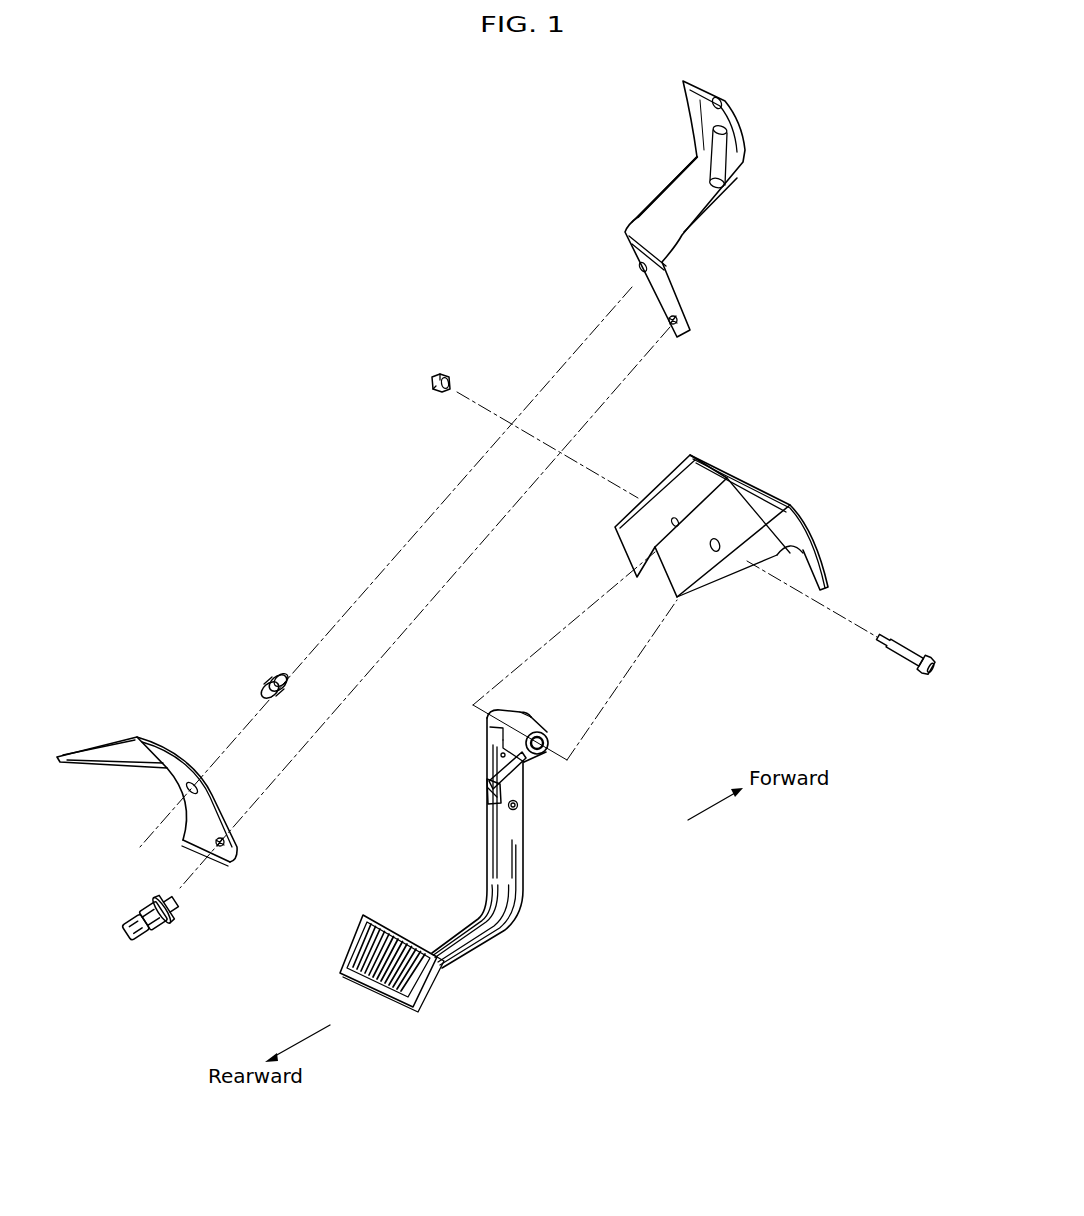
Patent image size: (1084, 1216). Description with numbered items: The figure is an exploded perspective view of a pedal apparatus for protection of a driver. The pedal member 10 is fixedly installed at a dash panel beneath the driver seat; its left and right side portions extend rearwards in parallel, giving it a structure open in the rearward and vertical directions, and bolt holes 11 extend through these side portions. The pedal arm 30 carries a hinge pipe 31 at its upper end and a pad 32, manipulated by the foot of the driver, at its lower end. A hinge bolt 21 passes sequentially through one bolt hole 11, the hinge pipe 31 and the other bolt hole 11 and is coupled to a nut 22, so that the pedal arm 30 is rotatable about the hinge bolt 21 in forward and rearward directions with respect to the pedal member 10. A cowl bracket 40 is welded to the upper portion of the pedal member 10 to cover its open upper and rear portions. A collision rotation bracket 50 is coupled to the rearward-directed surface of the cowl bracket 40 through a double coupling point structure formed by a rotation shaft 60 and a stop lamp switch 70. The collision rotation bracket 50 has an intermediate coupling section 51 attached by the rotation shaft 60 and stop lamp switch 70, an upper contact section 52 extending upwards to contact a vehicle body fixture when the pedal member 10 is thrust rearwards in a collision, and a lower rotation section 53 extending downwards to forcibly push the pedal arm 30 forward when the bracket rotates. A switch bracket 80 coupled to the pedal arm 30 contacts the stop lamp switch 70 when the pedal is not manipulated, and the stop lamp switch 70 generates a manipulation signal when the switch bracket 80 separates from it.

The pedal member 10 is at (745, 502).
The bolt holes 11 is at (715, 553).
The hinge bolt 21 is at (910, 652).
The nut 22 is at (440, 378).
The pedal arm 30 is at (520, 885).
The hinge pipe 31 is at (542, 737).
The pad 32 is at (363, 945).
The cowl bracket 40 is at (670, 197).
The collision rotation bracket 50 is at (199, 779).
The intermediate coupling section 51 is at (178, 778).
The upper contact section 52 is at (110, 750).
The lower rotation section 53 is at (185, 840).
The rotation shaft 60 is at (268, 682).
The stop lamp switch 70 is at (153, 938).
The switch bracket 80 is at (487, 795).